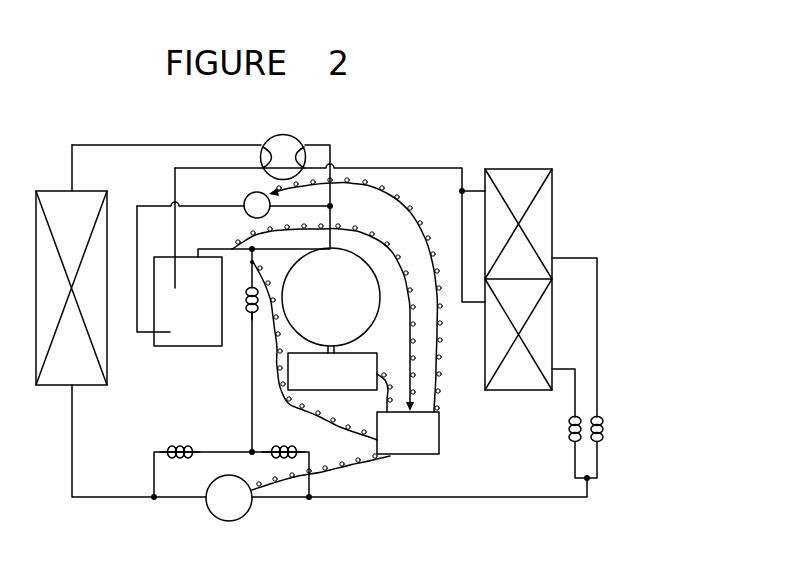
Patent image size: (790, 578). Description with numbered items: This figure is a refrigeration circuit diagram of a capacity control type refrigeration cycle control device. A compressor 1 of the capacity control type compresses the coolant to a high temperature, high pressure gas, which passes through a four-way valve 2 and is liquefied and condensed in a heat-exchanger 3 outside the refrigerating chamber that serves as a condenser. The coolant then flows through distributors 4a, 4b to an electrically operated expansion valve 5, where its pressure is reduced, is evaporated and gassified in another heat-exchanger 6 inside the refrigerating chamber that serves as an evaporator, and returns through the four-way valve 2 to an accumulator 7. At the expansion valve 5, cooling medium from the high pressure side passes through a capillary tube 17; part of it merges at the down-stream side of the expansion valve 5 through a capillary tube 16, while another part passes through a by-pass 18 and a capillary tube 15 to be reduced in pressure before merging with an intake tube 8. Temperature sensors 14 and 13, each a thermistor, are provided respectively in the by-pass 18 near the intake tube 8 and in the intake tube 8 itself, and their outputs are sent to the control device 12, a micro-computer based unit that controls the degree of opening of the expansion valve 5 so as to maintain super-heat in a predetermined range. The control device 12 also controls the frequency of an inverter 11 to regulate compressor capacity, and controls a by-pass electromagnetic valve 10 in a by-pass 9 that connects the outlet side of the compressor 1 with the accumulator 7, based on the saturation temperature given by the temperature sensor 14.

The compressor 1 is at (354, 310).
The four-way valve 2 is at (290, 136).
The heat-exchanger 3 is at (540, 225).
The distributor 4a is at (568, 437).
The distributor 4b is at (605, 432).
The electrically operated expansion valve 5 is at (240, 505).
The heat-exchanger 6 is at (105, 362).
The accumulator 7 is at (188, 333).
The intake tube 8 is at (200, 248).
The by-pass 9 is at (301, 207).
The by-pass electromagnetic valve 10 is at (245, 196).
The inverter 11 is at (337, 378).
The control device 12 is at (425, 438).
The temperature sensor 13 is at (232, 249).
The temperature sensor 14 is at (251, 262).
The capillary tube 15 is at (248, 313).
The capillary tube 16 is at (181, 447).
The capillary tube 17 is at (282, 446).
The by-pass 18 is at (252, 407).